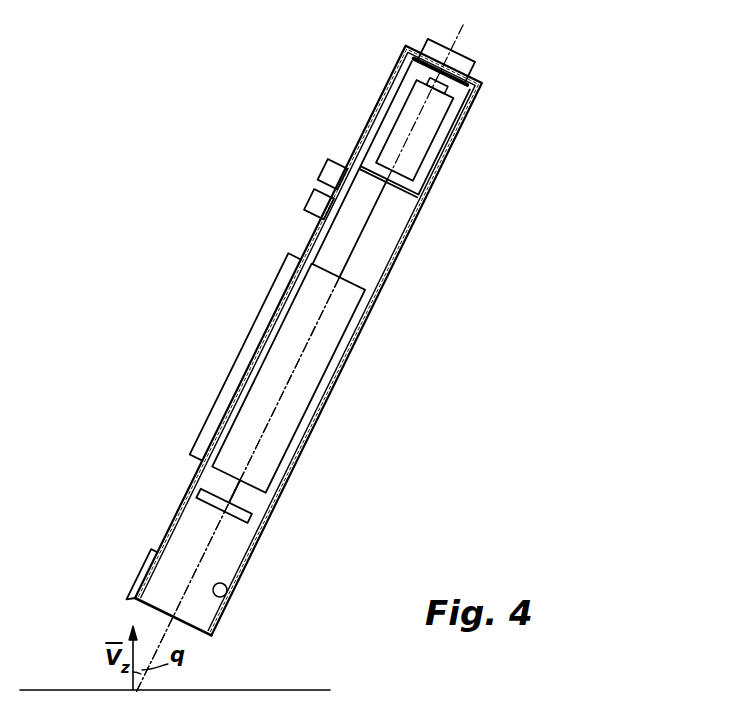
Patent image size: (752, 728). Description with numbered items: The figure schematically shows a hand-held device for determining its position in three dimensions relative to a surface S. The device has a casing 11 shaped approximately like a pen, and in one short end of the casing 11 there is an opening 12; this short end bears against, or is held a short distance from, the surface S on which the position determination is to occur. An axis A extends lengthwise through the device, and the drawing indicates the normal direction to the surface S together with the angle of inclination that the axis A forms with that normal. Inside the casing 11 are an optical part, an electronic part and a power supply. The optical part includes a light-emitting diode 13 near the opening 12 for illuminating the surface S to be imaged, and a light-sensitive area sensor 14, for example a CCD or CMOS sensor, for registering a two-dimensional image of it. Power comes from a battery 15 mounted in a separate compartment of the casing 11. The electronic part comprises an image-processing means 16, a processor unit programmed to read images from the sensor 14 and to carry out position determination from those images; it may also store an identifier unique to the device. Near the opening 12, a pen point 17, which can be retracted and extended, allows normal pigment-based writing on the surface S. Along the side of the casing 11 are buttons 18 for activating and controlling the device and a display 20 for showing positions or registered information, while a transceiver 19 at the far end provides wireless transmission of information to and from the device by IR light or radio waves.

The casing 11 is at (362, 315).
The opening 12 is at (170, 617).
The light-emitting diode 13 is at (227, 593).
The light-sensitive area sensor 14 is at (252, 504).
The battery 15 is at (413, 140).
The image-processing means 16 is at (290, 405).
The pen point 17 is at (148, 568).
The buttons 18 is at (313, 212).
The transceiver 19 is at (463, 66).
The display 20 is at (248, 352).
The axis A is at (161, 633).
The surface S is at (272, 692).